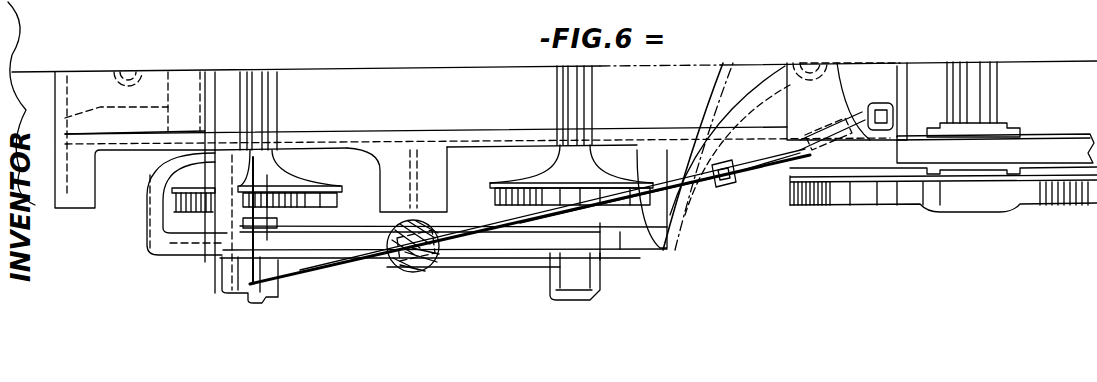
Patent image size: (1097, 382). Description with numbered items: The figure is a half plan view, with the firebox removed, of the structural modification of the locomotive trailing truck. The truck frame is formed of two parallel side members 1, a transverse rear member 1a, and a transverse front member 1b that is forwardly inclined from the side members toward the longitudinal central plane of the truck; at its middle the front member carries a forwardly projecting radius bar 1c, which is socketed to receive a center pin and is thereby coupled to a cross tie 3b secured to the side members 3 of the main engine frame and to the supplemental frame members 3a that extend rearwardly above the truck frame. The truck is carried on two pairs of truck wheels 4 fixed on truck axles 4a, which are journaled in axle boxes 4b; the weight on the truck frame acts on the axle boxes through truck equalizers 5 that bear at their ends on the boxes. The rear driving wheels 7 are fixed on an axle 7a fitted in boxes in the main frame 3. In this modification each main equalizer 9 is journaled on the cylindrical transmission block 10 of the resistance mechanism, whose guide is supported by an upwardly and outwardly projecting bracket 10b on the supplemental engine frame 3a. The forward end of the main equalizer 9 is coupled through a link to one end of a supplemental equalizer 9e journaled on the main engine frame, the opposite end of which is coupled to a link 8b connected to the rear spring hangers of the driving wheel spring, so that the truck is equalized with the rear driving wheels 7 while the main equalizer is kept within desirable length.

The side members 1 is at (494, 236).
The transverse rear member 1a is at (152, 174).
The transverse front member 1b is at (693, 167).
The radius bar 1c is at (762, 72).
The side members of the main frame 3 is at (1052, 144).
The supplemental frame members 3a is at (486, 136).
The cross tie 3b is at (877, 78).
The truck wheels 4 is at (290, 191).
The truck axles 4a is at (262, 92).
The axle boxes 4b is at (262, 298).
The truck equalizers 5 is at (386, 250).
The rear driving wheels 7 is at (892, 190).
The axle 7a is at (967, 80).
The link 8b is at (890, 112).
The main equalizers 9 is at (478, 230).
The supplemental equalizer 9e is at (732, 174).
The cylindrical transmission block 10 is at (425, 256).
The bracket 10b is at (394, 160).